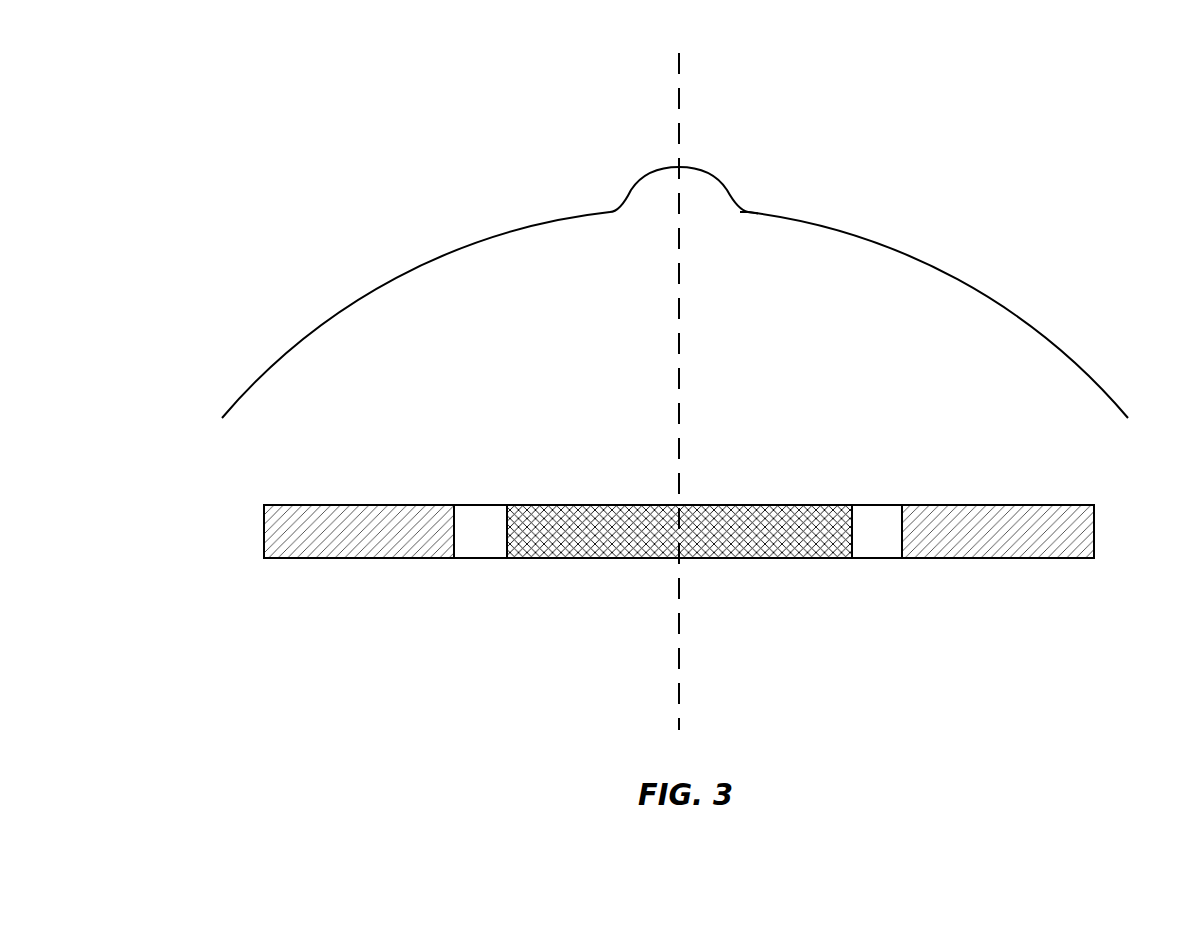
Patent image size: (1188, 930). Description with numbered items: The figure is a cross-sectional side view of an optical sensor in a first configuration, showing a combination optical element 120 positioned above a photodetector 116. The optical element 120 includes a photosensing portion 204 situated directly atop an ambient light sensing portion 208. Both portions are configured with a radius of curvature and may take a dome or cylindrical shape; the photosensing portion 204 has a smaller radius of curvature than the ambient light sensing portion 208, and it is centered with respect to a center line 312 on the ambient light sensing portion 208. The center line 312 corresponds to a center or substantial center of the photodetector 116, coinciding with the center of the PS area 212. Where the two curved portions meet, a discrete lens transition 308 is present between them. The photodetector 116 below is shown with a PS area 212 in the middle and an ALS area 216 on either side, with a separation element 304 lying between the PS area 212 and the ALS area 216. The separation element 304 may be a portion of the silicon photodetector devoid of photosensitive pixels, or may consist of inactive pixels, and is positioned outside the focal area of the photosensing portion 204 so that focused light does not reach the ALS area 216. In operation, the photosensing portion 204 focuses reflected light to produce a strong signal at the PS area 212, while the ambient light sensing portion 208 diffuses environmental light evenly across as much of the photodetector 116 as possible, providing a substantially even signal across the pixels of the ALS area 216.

The combination optical element 120 is at (648, 287).
The photosensing portion 204 is at (725, 188).
The ambient light sensing portion 208 is at (1063, 353).
The lens transition 308 is at (748, 211).
The center line 312 is at (679, 72).
The photodetector 116 is at (605, 559).
The ALS area 216 is at (360, 558).
The separation element 304 is at (465, 558).
The PS area 212 is at (577, 558).